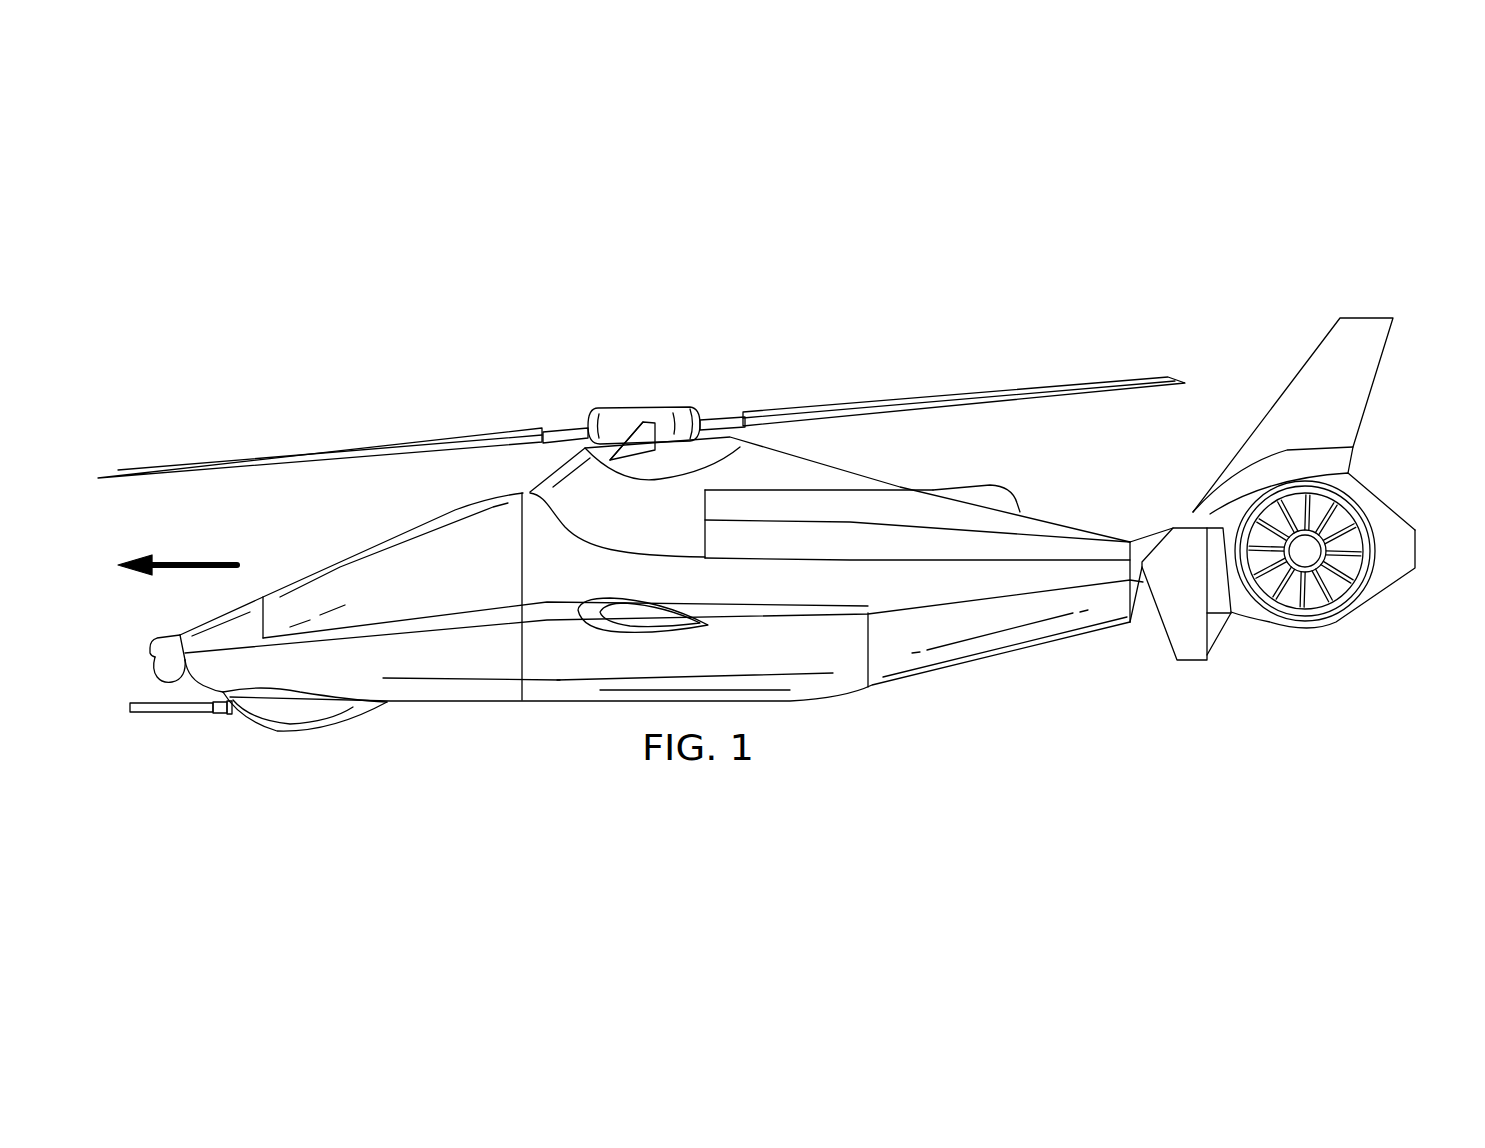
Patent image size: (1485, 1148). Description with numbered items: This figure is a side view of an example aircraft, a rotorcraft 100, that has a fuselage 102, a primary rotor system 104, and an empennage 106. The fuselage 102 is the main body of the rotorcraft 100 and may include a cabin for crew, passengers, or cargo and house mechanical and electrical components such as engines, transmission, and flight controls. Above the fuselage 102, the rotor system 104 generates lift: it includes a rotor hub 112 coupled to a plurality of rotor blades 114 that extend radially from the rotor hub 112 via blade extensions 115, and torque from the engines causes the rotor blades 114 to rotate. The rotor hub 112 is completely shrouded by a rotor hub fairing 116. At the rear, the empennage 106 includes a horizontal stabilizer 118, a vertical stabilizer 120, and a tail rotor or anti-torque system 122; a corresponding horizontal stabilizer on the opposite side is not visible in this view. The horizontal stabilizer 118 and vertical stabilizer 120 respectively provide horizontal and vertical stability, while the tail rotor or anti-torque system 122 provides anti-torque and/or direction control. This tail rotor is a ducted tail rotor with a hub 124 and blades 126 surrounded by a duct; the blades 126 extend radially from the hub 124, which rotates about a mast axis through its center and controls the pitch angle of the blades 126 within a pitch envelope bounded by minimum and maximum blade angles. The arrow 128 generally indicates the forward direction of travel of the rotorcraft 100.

The rotorcraft 100 is at (295, 306).
The fuselage 102 is at (848, 585).
The primary rotor system 104 is at (668, 320).
The empennage 106 is at (1400, 436).
The rotor hub 112 is at (656, 406).
The rotor blades 114 is at (299, 451).
The blade extensions 115 is at (565, 426).
The rotor hub fairing 116 is at (632, 414).
The horizontal stabilizer 118 is at (1188, 666).
The vertical stabilizer 120 is at (1393, 345).
The tail rotor or anti-torque system 122 is at (1328, 625).
The hub 124 is at (1322, 552).
The blades 126 is at (1297, 605).
The arrow 128 is at (196, 562).